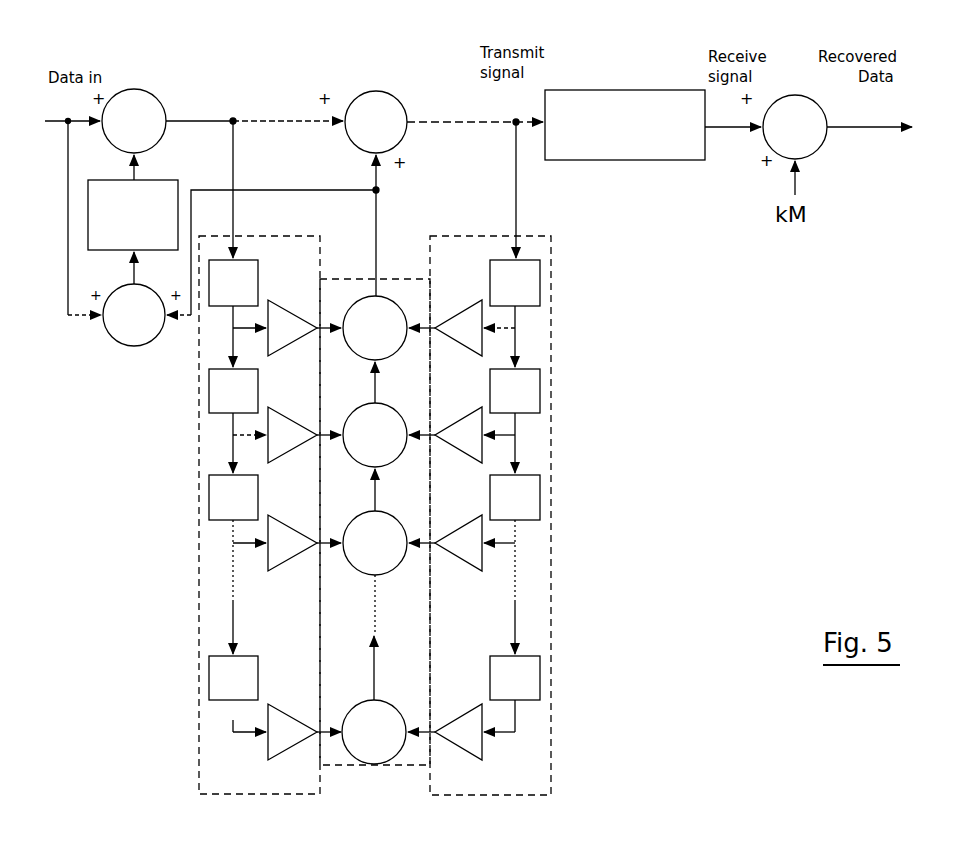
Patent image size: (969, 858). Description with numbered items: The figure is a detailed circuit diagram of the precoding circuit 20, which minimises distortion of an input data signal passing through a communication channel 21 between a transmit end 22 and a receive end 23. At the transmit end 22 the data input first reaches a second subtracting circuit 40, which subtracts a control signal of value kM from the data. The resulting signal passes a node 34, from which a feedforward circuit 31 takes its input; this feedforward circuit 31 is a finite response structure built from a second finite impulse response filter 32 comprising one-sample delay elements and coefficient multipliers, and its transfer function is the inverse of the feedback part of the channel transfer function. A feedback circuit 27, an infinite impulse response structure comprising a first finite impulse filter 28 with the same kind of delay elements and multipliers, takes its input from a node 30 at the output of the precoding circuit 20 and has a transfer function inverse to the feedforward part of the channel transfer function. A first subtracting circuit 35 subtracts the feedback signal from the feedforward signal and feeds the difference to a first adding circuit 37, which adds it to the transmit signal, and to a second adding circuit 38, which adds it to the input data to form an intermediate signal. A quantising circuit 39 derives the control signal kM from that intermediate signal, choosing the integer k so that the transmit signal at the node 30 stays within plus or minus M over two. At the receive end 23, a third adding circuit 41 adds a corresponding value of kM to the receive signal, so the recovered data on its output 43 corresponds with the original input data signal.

The precoding circuit 20 is at (195, 85).
The communication channel 21 is at (597, 90).
The transmit end 22 is at (312, 80).
The receive end 23 is at (842, 165).
The feedback circuit 27 is at (551, 452).
The first finite impulse filter 28 is at (551, 360).
The node 30 is at (516, 122).
The feedforward circuit 31 is at (199, 470).
The second finite impulse response filter 32 is at (199, 585).
The node 34 is at (233, 121).
The first subtracting circuit 35 is at (370, 767).
The first adding circuit 37 is at (378, 105).
The second adding circuit 38 is at (124, 336).
The quantising circuit 39 is at (106, 251).
The second subtracting circuit 40 is at (131, 100).
The third adding circuit 41 is at (770, 137).
The output 43 is at (853, 128).